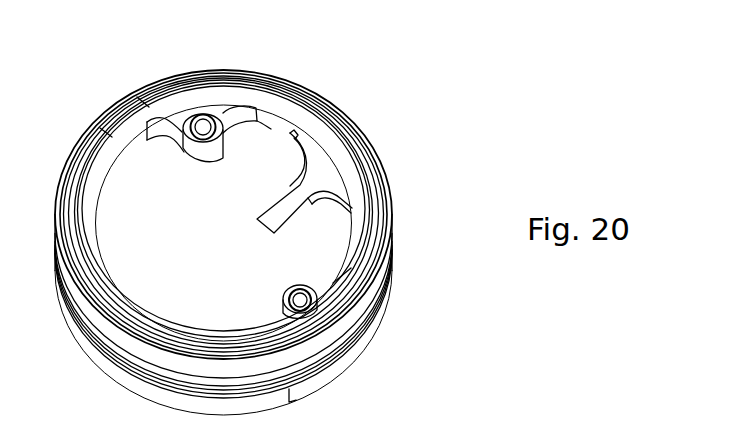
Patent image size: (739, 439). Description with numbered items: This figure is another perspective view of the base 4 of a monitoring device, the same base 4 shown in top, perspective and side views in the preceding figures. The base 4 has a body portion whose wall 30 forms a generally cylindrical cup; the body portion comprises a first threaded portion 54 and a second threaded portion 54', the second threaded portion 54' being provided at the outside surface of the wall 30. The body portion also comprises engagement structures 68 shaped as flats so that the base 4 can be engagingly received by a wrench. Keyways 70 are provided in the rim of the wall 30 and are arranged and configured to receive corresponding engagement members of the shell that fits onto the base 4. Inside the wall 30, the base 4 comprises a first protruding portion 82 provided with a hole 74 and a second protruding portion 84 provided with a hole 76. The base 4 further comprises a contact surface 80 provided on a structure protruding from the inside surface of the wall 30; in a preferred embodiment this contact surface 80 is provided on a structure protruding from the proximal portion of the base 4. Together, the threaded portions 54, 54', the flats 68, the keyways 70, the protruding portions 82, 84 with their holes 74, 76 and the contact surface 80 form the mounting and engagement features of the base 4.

The base 4 is at (392, 118).
The wall 30 is at (303, 101).
The first threaded portion 54 is at (274, 315).
The second threaded portion 54' is at (214, 314).
The engagement structures 68 is at (365, 325).
The keyways 70 is at (122, 117).
The hole 74 is at (302, 303).
The hole 76 is at (204, 124).
The contact surface 80 is at (260, 226).
The first protruding portion 82 is at (279, 310).
The second protruding portion 84 is at (209, 151).